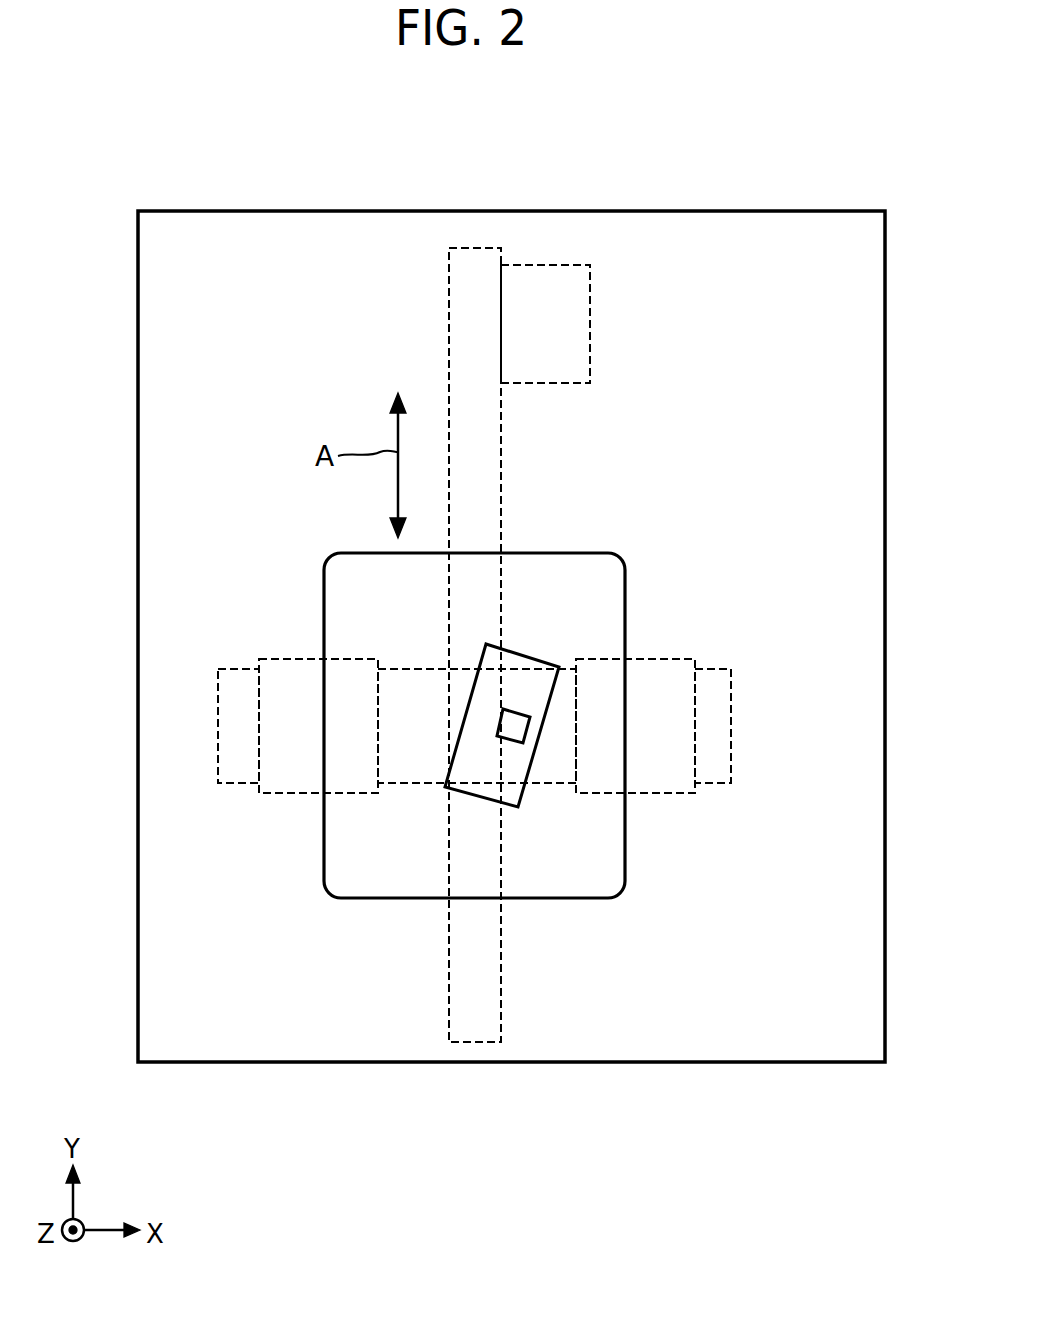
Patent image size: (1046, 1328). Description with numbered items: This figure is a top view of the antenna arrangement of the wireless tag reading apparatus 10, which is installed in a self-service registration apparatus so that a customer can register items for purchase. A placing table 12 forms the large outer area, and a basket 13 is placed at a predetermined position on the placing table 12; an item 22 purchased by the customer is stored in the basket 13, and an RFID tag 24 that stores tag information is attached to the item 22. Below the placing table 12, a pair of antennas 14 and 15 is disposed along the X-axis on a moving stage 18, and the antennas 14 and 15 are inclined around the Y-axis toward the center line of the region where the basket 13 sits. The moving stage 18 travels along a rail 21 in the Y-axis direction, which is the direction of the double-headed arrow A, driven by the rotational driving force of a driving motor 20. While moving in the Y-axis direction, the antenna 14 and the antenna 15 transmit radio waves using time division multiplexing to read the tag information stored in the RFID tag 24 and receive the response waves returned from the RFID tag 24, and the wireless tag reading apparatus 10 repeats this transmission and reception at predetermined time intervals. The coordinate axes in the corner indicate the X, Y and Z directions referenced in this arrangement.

The wireless tag reading apparatus 10 is at (764, 118).
The placing table 12 is at (211, 211).
The basket 13 is at (582, 553).
The antenna 14 is at (268, 793).
The antenna 15 is at (677, 793).
The moving stage 18 is at (218, 723).
The driving motor 20 is at (556, 265).
The rail 21 is at (477, 1025).
The item 22 is at (522, 655).
The RFID tag 24 is at (517, 742).